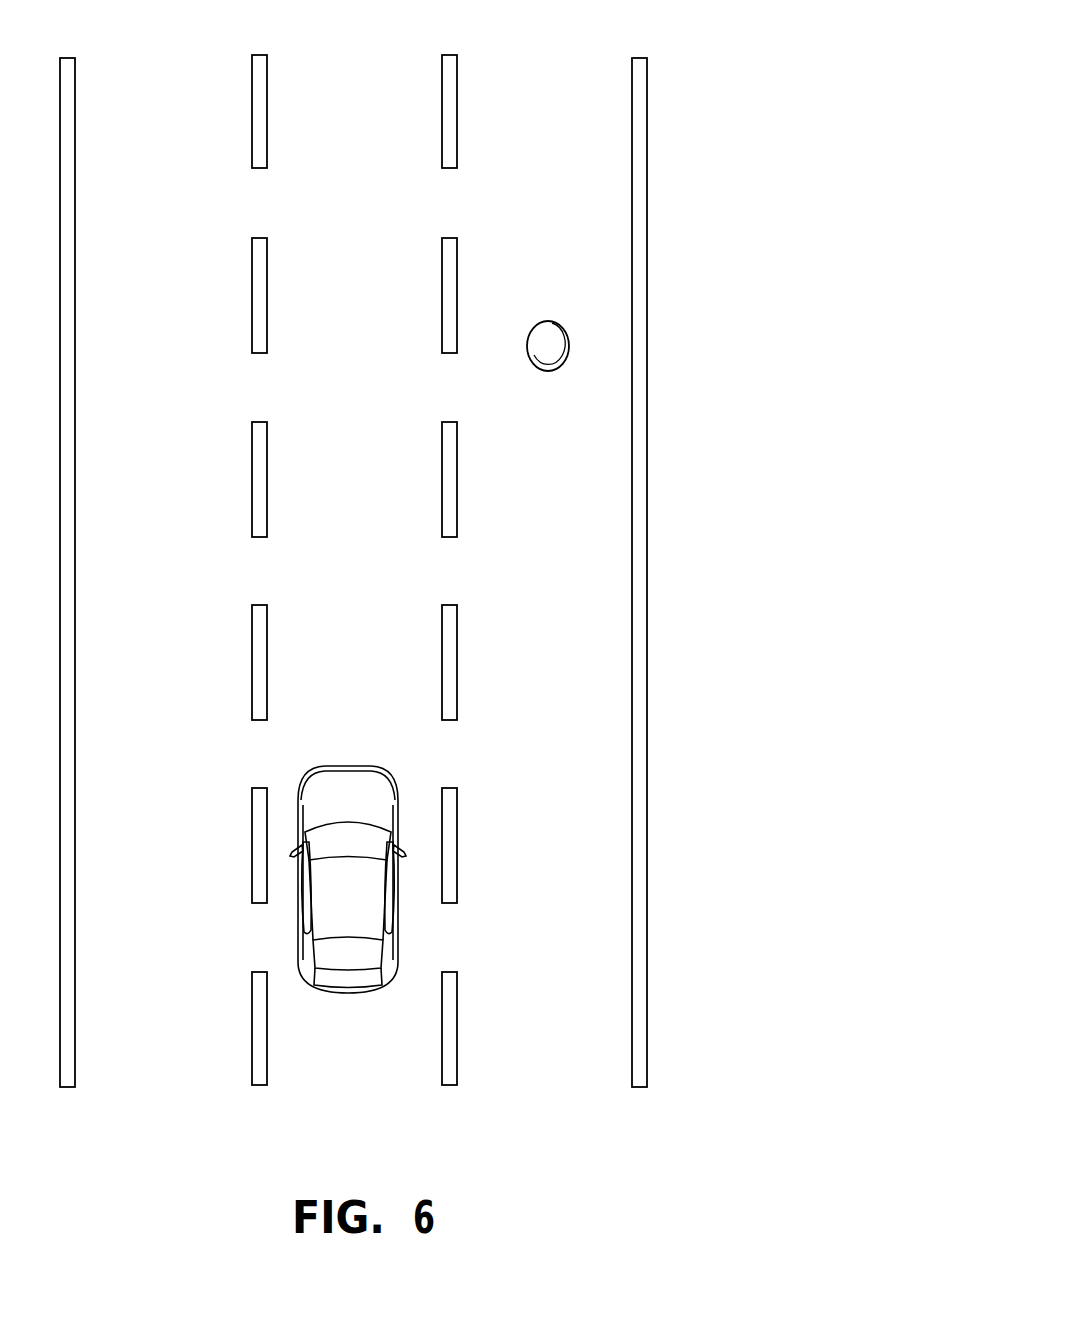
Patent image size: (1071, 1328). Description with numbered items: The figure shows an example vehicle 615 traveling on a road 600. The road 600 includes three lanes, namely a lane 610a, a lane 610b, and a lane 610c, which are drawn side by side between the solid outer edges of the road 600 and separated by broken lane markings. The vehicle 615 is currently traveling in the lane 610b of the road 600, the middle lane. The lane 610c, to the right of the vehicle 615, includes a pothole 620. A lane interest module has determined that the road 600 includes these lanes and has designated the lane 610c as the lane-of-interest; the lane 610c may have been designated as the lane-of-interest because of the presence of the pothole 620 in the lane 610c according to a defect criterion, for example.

The road 600 is at (717, 97).
The lane 610a is at (183, 1078).
The lane 610b is at (380, 1078).
The lane 610c is at (568, 1078).
The vehicle 615 is at (368, 910).
The pothole 620 is at (545, 330).